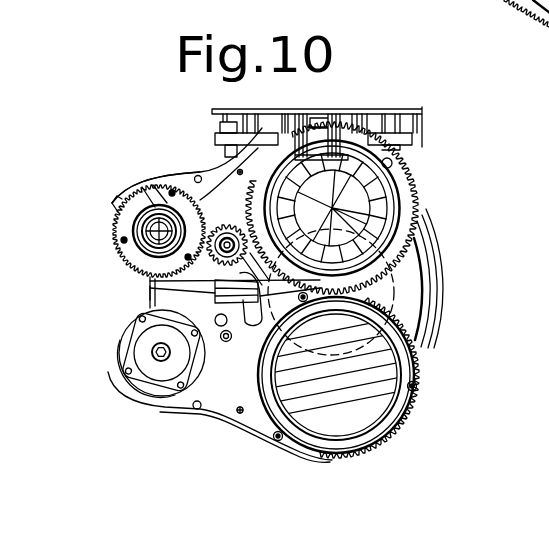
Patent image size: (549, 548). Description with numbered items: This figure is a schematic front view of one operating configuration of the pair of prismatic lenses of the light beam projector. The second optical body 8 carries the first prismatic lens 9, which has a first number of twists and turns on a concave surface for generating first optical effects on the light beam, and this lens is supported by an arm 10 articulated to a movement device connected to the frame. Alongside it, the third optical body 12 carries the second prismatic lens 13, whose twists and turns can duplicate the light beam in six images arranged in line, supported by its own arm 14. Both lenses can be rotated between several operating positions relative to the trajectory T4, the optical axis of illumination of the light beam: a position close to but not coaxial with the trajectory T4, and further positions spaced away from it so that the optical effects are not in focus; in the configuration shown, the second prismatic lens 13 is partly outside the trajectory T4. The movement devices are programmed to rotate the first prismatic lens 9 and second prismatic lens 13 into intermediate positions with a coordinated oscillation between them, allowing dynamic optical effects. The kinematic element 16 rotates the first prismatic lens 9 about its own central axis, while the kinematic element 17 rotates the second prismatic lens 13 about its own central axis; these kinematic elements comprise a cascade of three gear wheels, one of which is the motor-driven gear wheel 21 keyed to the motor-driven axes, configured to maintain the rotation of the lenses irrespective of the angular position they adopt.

The second optical body 8 is at (105, 212).
The first prismatic lens 9 is at (410, 182).
The arm 10 is at (212, 190).
The third optical body 12 is at (226, 427).
The second prismatic lens 13 is at (347, 395).
The arm 14 is at (220, 368).
The kinematic element 16 is at (228, 213).
The kinematic element 17 is at (407, 416).
The motor-driven gear wheel 21 is at (137, 250).
The trajectory T4 is at (397, 290).